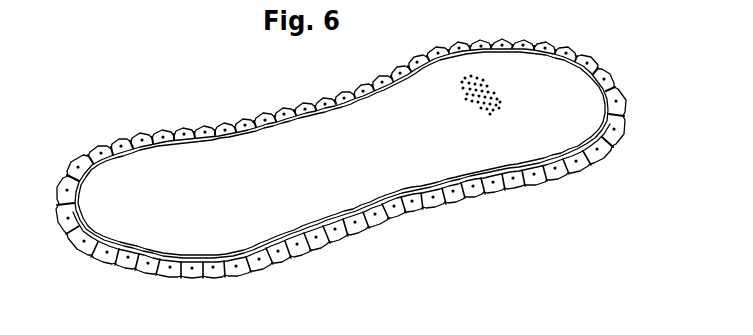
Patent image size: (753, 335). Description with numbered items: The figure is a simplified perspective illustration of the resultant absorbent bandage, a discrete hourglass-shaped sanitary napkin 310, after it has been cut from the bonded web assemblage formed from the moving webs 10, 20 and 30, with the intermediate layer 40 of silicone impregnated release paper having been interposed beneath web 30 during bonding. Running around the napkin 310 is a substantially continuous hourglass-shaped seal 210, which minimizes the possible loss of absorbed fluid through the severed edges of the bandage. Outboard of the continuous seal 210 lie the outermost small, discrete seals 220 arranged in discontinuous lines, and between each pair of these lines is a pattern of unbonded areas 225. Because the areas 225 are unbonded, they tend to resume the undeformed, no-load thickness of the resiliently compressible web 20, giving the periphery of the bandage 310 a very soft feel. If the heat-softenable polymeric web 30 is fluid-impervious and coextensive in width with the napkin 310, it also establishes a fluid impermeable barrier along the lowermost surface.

The web 10 is at (66, 166).
The resiliently compressible web 20 is at (237, 277).
The heat-softenable polymeric web 30 is at (553, 178).
The intermediate layer 40 is at (477, 188).
The continuous seal 210 is at (602, 73).
The small, discrete seals 220 is at (327, 238).
The unbonded areas 225 is at (426, 200).
The sanitary napkin 310 is at (213, 112).